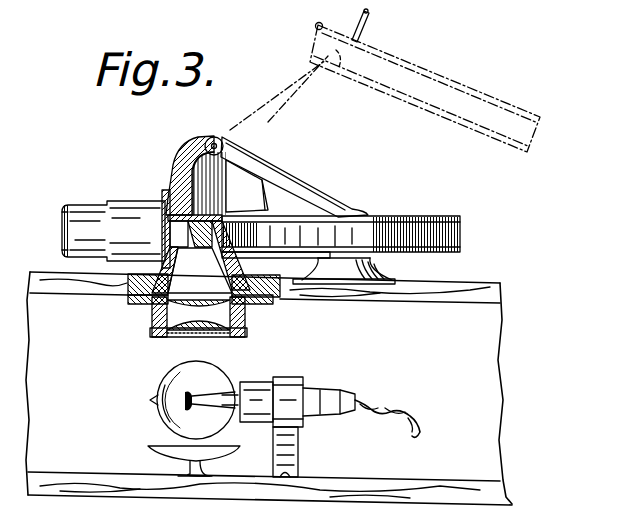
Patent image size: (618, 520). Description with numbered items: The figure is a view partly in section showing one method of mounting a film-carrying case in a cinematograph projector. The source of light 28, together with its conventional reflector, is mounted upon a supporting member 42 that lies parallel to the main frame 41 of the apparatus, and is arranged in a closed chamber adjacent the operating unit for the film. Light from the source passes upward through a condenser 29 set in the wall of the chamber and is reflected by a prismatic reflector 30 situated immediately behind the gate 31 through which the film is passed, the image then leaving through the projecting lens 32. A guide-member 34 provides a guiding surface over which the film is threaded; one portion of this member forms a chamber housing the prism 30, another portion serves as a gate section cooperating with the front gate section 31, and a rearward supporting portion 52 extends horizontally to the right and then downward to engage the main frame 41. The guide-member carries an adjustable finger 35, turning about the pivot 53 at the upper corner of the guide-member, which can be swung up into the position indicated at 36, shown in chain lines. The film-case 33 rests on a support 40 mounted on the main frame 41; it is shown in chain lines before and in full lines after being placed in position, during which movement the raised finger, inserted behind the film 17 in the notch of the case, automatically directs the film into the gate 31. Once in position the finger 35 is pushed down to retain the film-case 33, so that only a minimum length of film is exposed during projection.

The film 17 is at (316, 43).
The source of light 28 is at (162, 413).
The condenser 29 is at (152, 316).
The prismatic reflector 30 is at (201, 254).
The gate 31 is at (166, 200).
The projecting lens 32 is at (127, 212).
The film-case 33 is at (425, 209).
The guide-member 34 is at (182, 165).
The finger 35 is at (300, 194).
The swung-up position of finger 36 is at (283, 93).
The support 40 is at (378, 278).
The main frame 41 is at (478, 293).
The supporting member 42 is at (450, 480).
The rearward supporting portion 52 is at (224, 217).
The pivot 53 is at (213, 141).